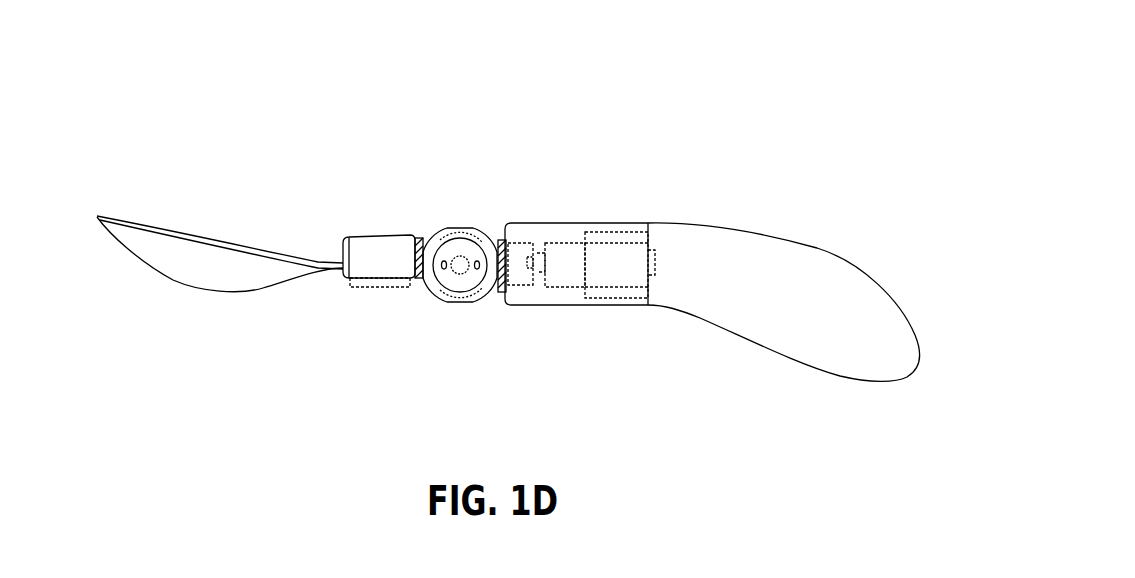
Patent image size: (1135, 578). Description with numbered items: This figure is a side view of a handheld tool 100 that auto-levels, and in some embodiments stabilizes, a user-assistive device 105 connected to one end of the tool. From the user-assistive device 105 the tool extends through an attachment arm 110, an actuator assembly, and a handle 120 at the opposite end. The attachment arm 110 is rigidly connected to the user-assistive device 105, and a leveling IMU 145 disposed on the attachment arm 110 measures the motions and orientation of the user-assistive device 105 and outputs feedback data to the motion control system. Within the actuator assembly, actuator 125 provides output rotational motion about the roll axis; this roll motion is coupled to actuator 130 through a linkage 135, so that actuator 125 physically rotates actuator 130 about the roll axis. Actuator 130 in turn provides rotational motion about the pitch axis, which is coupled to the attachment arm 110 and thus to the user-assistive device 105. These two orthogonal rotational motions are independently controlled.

The handheld tool 100 is at (764, 66).
The user-assistive device 105 is at (175, 275).
The attachment arm 110 is at (373, 248).
The handle 120 is at (818, 252).
The actuator 125 is at (568, 277).
The actuator 130 is at (450, 245).
The linkage 135 is at (513, 245).
The leveling IMU 145 is at (380, 287).